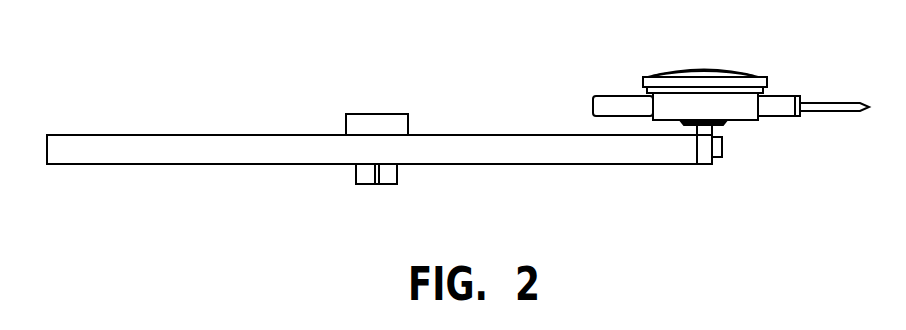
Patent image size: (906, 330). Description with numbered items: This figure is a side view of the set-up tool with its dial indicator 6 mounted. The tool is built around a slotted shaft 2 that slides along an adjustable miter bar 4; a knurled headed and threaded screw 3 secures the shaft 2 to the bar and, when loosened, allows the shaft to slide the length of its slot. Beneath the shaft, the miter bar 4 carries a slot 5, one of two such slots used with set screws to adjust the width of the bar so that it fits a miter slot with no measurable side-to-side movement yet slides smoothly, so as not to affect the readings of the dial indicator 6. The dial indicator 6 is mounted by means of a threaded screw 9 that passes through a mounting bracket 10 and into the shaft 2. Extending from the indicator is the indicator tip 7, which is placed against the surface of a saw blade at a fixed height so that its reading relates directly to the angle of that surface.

The slotted shaft 2 is at (140, 135).
The knurled headed and threaded screw 3 is at (347, 125).
The adjustable miter bar 4 is at (359, 184).
The slot 5 is at (382, 176).
The dial indicator 6 is at (703, 72).
The indicator tip 7 is at (858, 102).
The threaded screw 9 is at (723, 147).
The mounting bracket 10 is at (705, 165).